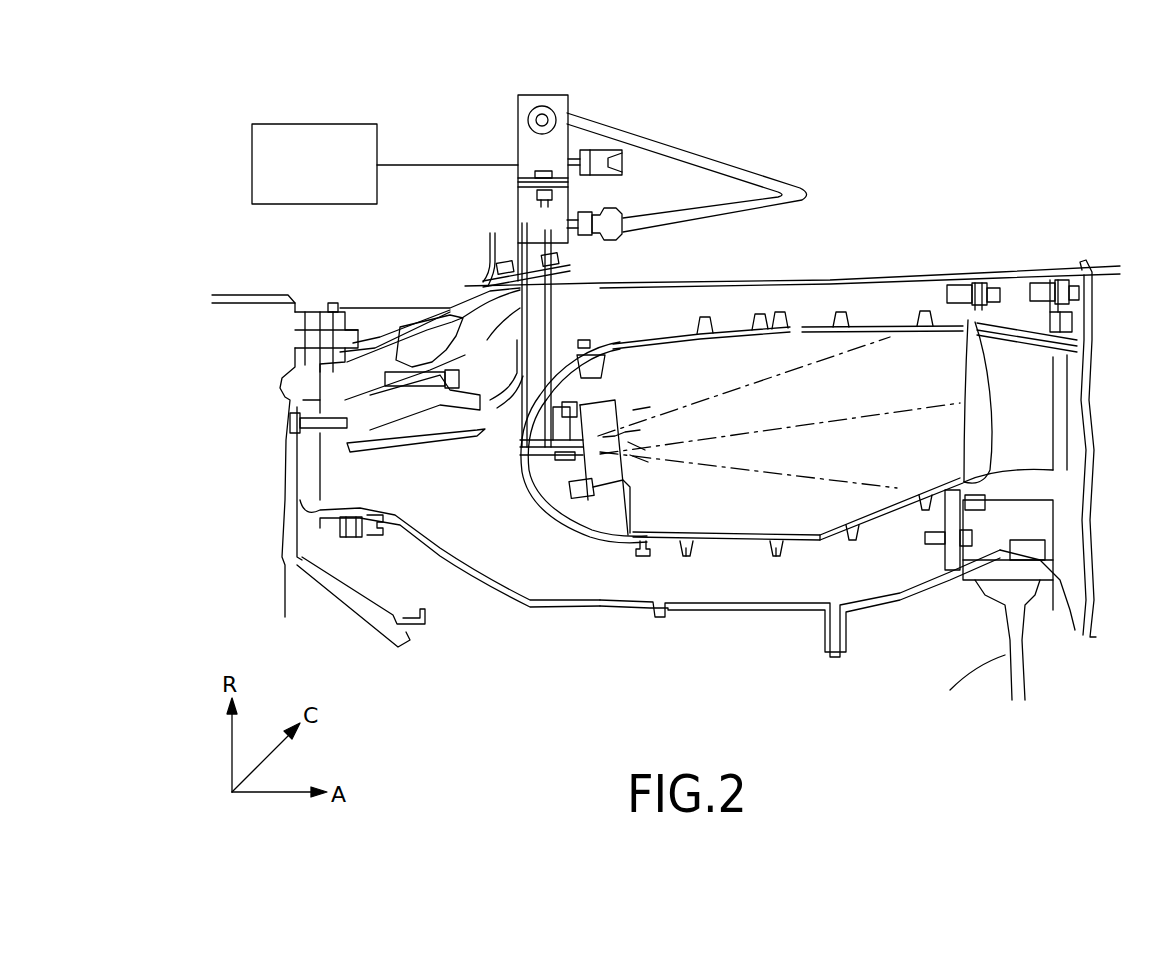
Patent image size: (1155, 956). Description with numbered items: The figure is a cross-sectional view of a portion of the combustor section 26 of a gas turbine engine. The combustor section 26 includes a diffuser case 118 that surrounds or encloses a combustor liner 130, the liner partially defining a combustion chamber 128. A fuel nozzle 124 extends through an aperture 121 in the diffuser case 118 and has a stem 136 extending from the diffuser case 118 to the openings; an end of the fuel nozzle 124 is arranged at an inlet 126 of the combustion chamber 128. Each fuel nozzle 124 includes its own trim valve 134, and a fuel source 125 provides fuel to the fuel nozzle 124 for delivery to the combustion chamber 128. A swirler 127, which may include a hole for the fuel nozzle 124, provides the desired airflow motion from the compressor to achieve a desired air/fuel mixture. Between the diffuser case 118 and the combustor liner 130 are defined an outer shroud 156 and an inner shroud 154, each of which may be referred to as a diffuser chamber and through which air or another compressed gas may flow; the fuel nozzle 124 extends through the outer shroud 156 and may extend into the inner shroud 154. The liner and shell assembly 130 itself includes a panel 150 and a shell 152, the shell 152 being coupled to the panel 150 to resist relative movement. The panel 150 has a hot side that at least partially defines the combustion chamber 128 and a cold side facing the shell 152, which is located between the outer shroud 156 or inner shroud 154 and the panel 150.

The combustor section 26 is at (878, 136).
The diffuser case 118 is at (813, 280).
The aperture 121 is at (560, 298).
The fuel nozzle 124 is at (550, 474).
The fuel source 125 is at (321, 172).
The inlet 126 is at (593, 441).
The swirler 127 is at (610, 543).
The combustion chamber 128 is at (838, 402).
The combustor liner 130 is at (737, 318).
The trim valve 134 is at (531, 146).
The stem 136 is at (520, 418).
The panel 150 is at (728, 532).
The shell 152 is at (733, 541).
The inner shroud 154 is at (744, 600).
The outer shroud 156 is at (748, 318).